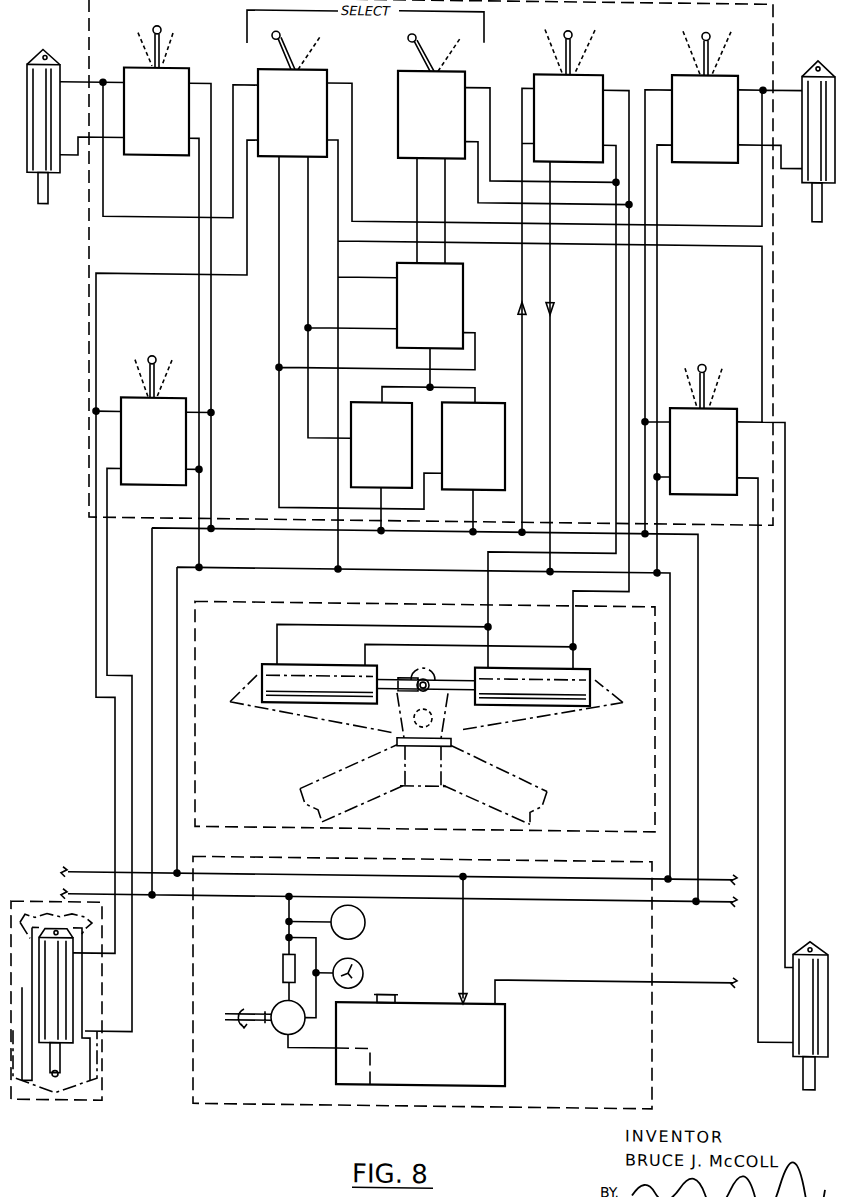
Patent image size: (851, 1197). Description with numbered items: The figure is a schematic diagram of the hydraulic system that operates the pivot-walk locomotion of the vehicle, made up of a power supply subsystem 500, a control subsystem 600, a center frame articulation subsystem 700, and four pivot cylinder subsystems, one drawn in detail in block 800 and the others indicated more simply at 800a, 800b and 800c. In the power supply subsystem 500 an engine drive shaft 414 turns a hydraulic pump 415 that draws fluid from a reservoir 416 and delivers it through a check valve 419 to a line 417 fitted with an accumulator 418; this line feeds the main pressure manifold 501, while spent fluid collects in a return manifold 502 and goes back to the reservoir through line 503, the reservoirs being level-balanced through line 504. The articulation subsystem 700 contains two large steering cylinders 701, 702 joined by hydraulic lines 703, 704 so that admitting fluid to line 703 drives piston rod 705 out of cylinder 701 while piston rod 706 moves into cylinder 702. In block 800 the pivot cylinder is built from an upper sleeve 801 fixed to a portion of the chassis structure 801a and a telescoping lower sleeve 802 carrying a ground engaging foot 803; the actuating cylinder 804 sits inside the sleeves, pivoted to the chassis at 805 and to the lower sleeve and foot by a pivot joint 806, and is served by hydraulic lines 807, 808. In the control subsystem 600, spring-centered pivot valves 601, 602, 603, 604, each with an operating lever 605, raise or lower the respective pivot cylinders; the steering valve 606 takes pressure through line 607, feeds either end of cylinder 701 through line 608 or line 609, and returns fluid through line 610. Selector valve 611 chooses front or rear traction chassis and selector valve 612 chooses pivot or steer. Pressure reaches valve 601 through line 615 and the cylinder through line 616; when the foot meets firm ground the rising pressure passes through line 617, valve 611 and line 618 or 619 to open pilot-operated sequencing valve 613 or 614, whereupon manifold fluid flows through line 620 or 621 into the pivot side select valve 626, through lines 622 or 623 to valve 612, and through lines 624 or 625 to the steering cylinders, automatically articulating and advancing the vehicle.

The control subsystem 600 is at (774, 320).
The left front pivot valve 601 is at (181, 156).
The right front pivot valve 602 is at (705, 160).
The left rear pivot valve 603 is at (135, 485).
The right rear pivot valve 604 is at (692, 488).
The operating lever 605 is at (160, 47).
The steering valve 606 is at (550, 67).
The supply line 607 is at (524, 266).
The steering line 608 is at (628, 294).
The steering line 609 is at (615, 335).
The return line 610 is at (551, 353).
The front-or-rear selector valve 611 is at (317, 67).
The pivot-or-steer selector valve 612 is at (415, 66).
The pivot sequencing valve 613 is at (351, 461).
The pivot sequencing valve 614 is at (506, 463).
The pressure line 615 is at (211, 332).
The cylinder supply line 616 is at (103, 78).
The pilot line 617 is at (100, 190).
The pilot line 618 is at (279, 288).
The pilot line 619 is at (308, 295).
The sequencing valve outlet line 620 is at (381, 493).
The sequencing valve outlet line 621 is at (472, 500).
The line to selector valve 622 is at (417, 172).
The line to selector valve 623 is at (445, 188).
The line to steering cylinder 624 is at (478, 200).
The line to steering cylinder 625 is at (490, 95).
The pivot side select valve 626 is at (462, 305).
The power supply subsystem 500 is at (272, 1104).
The main pressure manifold 501 is at (151, 566).
The return manifold 502 is at (428, 574).
The reservoir return line 503 is at (465, 923).
The reservoir balancing line 504 is at (699, 973).
The engine drive shaft 414 is at (252, 1016).
The hydraulic pump 415 is at (277, 999).
The reservoir 416 is at (506, 1047).
The pump delivery line 417 is at (288, 901).
The accumulator 418 is at (366, 921).
The check valve 419 is at (284, 958).
The center frame articulation subsystem 700 is at (656, 685).
The steering cylinder 701 is at (318, 673).
The steering cylinder 702 is at (534, 672).
The interconnecting hydraulic line 703 is at (393, 620).
The interconnecting hydraulic line 704 is at (428, 648).
The piston rod 705 is at (396, 688).
The piston rod 706 is at (452, 687).
The pivot cylinder subsystem 800 is at (54, 1103).
The left front pivot cylinder subsystem 800a is at (49, 40).
The pivot cylinder subsystem 800b is at (819, 42).
The pivot cylinder subsystem 800c is at (788, 1057).
The upper sleeve 801 is at (74, 960).
The chassis structure 801a is at (40, 913).
The lower sleeve 802 is at (92, 996).
The ground engaging foot 803 is at (66, 1092).
The actuating cylinder 804 is at (72, 1047).
The upper pivot mount 805 is at (72, 934).
The pivot joint 806 is at (62, 1076).
The hydraulic line 807 is at (92, 688).
The hydraulic line 808 is at (130, 716).